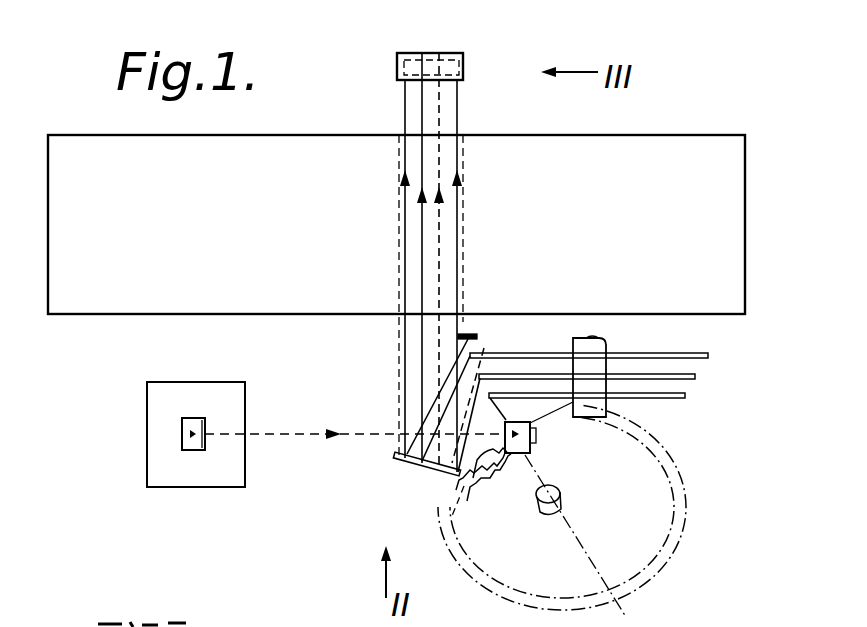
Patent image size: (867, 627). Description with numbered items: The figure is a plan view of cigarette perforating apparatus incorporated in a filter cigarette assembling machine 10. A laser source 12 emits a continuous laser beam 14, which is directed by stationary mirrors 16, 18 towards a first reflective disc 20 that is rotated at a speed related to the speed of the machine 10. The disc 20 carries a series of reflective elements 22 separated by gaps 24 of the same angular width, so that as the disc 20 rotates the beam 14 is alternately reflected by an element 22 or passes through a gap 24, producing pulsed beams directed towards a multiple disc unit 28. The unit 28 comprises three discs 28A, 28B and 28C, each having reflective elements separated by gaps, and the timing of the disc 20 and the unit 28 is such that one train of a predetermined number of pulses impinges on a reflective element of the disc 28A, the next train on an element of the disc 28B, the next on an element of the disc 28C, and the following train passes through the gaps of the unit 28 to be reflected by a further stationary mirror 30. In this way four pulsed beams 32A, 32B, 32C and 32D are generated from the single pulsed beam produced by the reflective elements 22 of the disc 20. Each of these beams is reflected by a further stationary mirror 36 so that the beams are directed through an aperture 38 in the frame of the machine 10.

The filter cigarette assembling machine 10 is at (79, 313).
The laser source 12 is at (164, 384).
The laser beam 14 is at (292, 440).
The stationary mirror 16 is at (182, 442).
The stationary mirror 18 is at (546, 440).
The first reflective disc 20 is at (653, 546).
The reflective elements 22 is at (460, 483).
The gaps 24 is at (453, 504).
The multiple disc unit 28 is at (609, 371).
The disc 28A is at (684, 400).
The disc 28B is at (696, 381).
The disc 28C is at (672, 352).
The stationary mirror 30 is at (470, 333).
The pulsed beam 32A is at (495, 517).
The pulsed beam 32B is at (487, 352).
The pulsed beam 32C is at (450, 404).
The pulsed beam 32D is at (421, 436).
The stationary mirror 36 is at (411, 467).
The aperture 38 is at (466, 226).